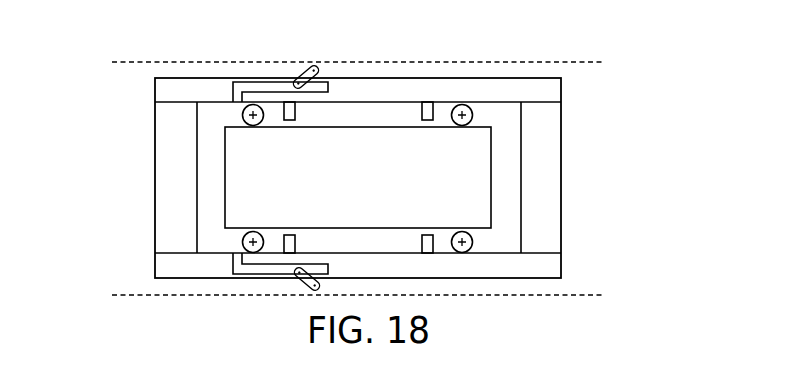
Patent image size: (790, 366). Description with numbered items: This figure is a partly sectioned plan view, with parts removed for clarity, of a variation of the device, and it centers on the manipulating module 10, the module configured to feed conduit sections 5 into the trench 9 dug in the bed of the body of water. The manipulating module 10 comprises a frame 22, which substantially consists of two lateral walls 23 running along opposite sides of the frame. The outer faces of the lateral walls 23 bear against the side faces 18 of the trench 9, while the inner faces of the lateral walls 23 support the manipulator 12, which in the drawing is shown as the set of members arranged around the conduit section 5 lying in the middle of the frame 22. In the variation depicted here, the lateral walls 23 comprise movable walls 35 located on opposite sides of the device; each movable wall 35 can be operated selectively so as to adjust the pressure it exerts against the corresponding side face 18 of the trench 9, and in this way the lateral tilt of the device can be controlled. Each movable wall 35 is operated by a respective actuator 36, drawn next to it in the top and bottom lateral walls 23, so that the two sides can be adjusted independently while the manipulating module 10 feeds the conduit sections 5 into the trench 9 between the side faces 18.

The conduit section 5 is at (500, 177).
The trench 9 is at (574, 161).
The manipulating module 10 is at (614, 213).
The manipulator 12 is at (487, 115).
The side face 18 is at (131, 72).
The frame 22 is at (395, 75).
The lateral wall 23 is at (550, 92).
The movable wall 35 is at (303, 71).
The actuator 36 is at (255, 87).